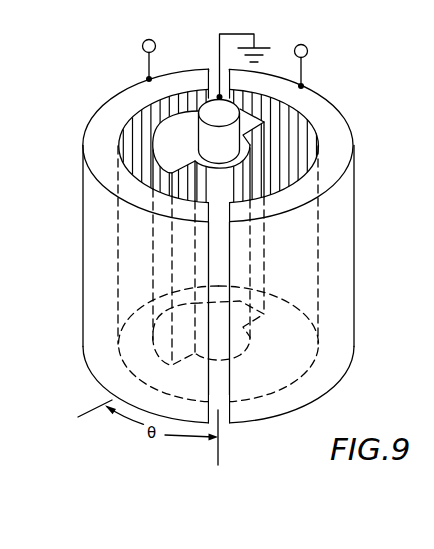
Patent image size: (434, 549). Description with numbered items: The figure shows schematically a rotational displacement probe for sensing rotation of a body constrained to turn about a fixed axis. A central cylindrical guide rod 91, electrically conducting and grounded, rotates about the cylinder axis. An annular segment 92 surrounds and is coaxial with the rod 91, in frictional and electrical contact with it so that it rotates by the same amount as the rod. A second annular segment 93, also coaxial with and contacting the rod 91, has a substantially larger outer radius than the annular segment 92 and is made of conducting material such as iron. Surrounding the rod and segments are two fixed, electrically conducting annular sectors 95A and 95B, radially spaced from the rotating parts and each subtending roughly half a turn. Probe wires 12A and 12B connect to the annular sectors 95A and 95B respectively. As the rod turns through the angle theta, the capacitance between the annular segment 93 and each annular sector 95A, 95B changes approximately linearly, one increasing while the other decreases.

The probe wire 12A is at (122, 52).
The probe wire 12B is at (328, 59).
The central cylindrical guide rod 91 is at (227, 108).
The annular segment 92 is at (248, 147).
The second annular segment 93 is at (218, 237).
The annular sector 95A is at (110, 120).
The annular sector 95B is at (337, 145).